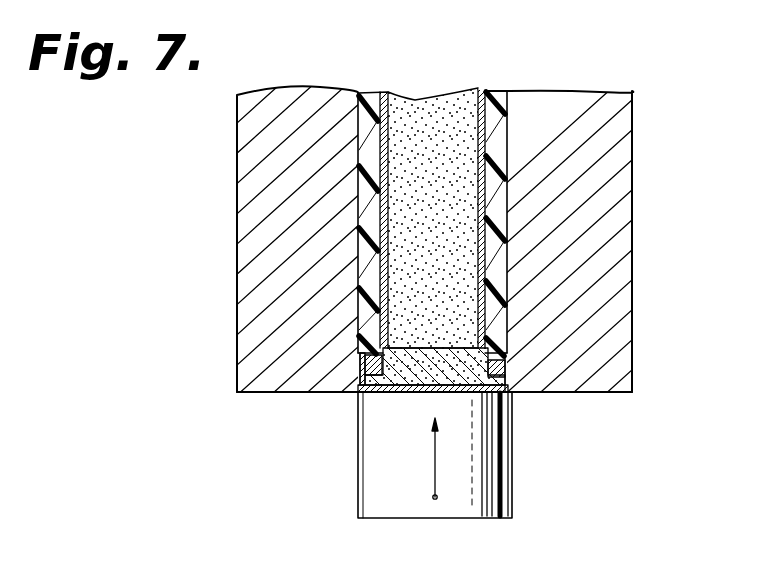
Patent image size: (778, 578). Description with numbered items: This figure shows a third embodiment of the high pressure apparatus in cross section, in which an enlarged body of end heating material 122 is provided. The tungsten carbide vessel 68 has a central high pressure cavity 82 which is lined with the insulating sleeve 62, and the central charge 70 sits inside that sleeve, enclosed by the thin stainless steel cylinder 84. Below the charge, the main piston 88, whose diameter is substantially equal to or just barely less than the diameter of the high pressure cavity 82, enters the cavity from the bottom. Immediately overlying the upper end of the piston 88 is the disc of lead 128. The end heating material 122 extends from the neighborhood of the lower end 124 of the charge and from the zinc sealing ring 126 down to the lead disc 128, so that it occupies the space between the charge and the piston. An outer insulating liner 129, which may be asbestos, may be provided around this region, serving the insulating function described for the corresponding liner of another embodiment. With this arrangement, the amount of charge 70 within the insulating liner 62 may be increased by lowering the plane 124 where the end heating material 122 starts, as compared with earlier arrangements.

The insulating sleeve 62 is at (373, 190).
The tungsten carbide vessel 68 is at (590, 237).
The central charge 70 is at (412, 120).
The central high pressure cavity 82 is at (501, 145).
The thin stainless steel cylinder 84 is at (479, 100).
The main piston 88 is at (411, 503).
The end heating material 122 is at (483, 394).
The lower end of the charge 124 is at (408, 347).
The zinc sealing ring 126 is at (490, 363).
The disc of lead 128 is at (414, 394).
The outer insulating liner 129 is at (310, 380).